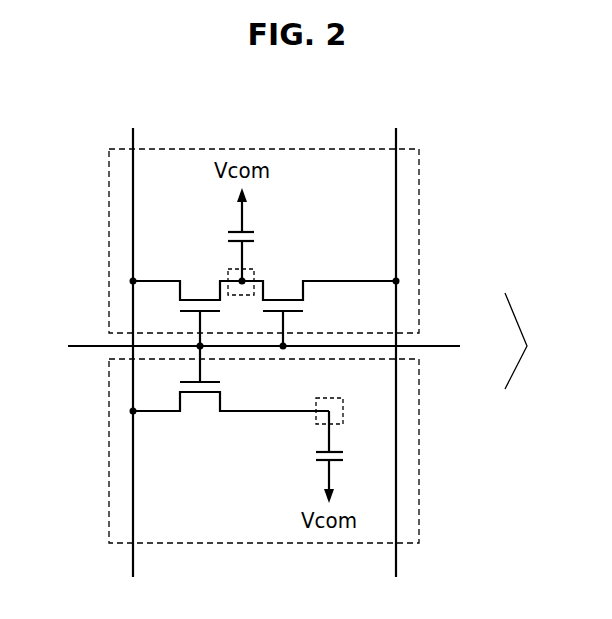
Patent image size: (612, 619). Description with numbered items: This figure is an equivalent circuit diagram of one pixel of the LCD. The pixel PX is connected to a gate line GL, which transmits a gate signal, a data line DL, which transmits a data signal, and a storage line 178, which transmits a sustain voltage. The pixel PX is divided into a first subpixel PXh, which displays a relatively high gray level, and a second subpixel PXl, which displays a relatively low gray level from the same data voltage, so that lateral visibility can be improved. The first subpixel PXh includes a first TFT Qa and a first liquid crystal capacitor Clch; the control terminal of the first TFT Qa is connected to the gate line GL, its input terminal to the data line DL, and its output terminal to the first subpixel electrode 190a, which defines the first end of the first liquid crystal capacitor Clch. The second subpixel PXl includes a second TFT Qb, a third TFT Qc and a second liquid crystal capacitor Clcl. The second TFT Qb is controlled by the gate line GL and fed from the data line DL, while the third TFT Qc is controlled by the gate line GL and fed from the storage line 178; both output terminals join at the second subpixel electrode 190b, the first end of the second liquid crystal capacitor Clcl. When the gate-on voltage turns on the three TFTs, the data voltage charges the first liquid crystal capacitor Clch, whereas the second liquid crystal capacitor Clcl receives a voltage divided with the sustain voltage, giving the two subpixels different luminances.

The storage line 178 is at (396, 205).
The first subpixel electrode 190a is at (313, 428).
The second subpixel electrode 190b is at (228, 270).
The data line DL is at (134, 336).
The gate line GL is at (248, 347).
The pixel PX is at (531, 341).
The second subpixel PXl is at (420, 278).
The first subpixel PXh is at (420, 405).
The first TFT Qa is at (230, 380).
The second TFT Qb is at (186, 314).
The third TFT Qc is at (321, 314).
The second liquid crystal capacitor Clcl is at (264, 236).
The first liquid crystal capacitor Clch is at (353, 457).